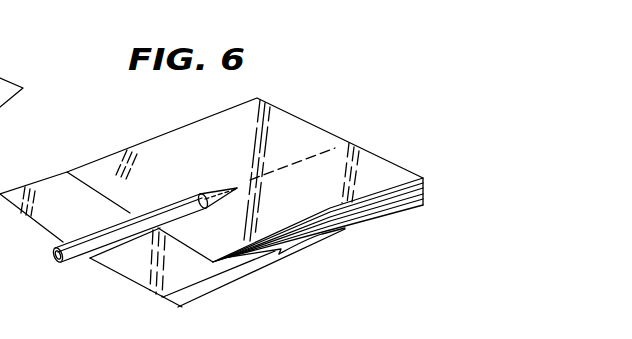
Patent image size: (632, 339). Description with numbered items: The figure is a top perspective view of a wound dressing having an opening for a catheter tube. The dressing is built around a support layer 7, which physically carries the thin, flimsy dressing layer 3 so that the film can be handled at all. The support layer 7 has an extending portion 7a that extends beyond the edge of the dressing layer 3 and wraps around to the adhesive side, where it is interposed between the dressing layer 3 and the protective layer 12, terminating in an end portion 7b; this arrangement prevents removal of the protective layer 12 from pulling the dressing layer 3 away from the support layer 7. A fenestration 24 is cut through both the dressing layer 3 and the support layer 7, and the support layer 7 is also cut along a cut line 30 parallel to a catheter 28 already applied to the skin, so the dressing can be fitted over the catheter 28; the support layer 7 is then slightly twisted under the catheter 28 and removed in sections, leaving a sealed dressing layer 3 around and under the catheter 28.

The support layer 7 is at (295, 132).
The extending portion 7a is at (130, 272).
The end portion 7b is at (7, 80).
The dressing layer 3 is at (312, 228).
The protective layer 12 is at (377, 220).
The fenestration 24 is at (167, 199).
The catheter 28 is at (67, 258).
The cut line 30 is at (323, 157).